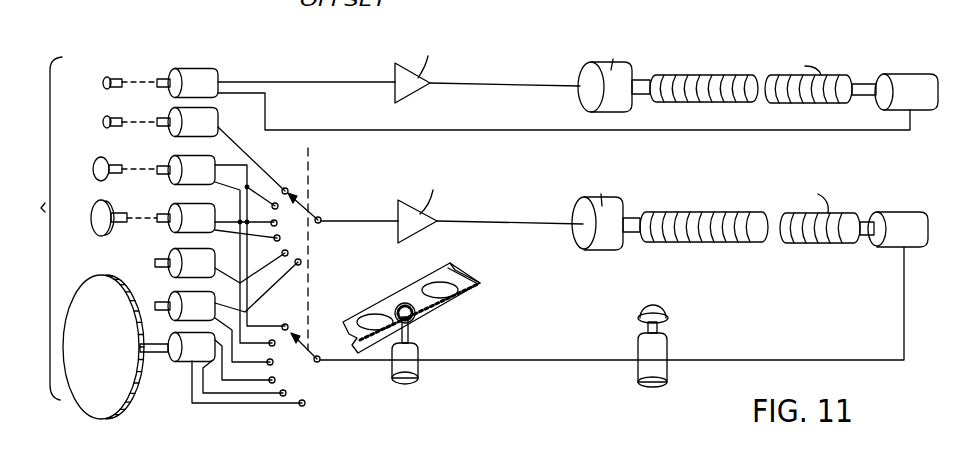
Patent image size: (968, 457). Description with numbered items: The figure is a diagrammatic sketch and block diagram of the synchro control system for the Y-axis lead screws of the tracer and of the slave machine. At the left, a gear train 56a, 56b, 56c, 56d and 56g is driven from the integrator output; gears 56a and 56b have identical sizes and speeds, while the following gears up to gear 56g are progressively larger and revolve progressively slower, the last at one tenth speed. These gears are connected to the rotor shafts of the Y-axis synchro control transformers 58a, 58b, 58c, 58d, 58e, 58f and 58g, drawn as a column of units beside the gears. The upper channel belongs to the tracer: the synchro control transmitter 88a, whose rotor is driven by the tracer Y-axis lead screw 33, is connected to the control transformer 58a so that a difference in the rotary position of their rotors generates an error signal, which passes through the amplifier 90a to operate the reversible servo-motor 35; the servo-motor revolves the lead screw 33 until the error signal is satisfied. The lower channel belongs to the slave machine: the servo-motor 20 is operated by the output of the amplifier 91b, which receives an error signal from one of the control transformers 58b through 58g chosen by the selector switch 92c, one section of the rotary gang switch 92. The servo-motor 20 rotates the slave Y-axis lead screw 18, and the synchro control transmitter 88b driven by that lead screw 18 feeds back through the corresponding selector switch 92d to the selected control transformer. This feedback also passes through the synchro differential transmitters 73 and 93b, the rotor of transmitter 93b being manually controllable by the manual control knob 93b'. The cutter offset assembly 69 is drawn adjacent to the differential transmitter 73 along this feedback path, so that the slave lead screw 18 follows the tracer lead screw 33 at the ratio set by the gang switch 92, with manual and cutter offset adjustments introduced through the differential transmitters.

The gear 56a is at (108, 78).
The gear 56b is at (108, 117).
The gear 56c is at (104, 160).
The gear 56d is at (100, 205).
The gear 56g is at (123, 408).
The Y-axis synchro control transformer 58a is at (186, 70).
The Y-axis synchro control transformer 58b is at (183, 109).
The Y-axis synchro control transformer 58c is at (182, 157).
The Y-axis synchro control transformer 58d is at (183, 203).
The Y-axis synchro control transformer 58e is at (184, 250).
The Y-axis synchro control transformer 58f is at (184, 293).
The Y-axis synchro control transformer 58g is at (191, 355).
The rotary gang switch 92 is at (294, 183).
The selector switch 92c is at (310, 217).
The selector switch 92d is at (312, 355).
The amplifier 90a is at (422, 78).
The amplifier 91b is at (413, 227).
The reversible servo-motor 35 is at (590, 103).
The Y-axis lead screw 33 is at (840, 78).
The synchro control transmitter 88a is at (928, 102).
The reversible servo-motor 20 is at (605, 248).
The lead screw 18 is at (705, 242).
The synchro control transmitter 88b is at (916, 246).
The cutter offset dial assembly 69 is at (470, 293).
The synchro differential transmitter 73 is at (418, 368).
The synchro differential transmitter 93b is at (671, 372).
The manual control knob 93b' is at (685, 315).